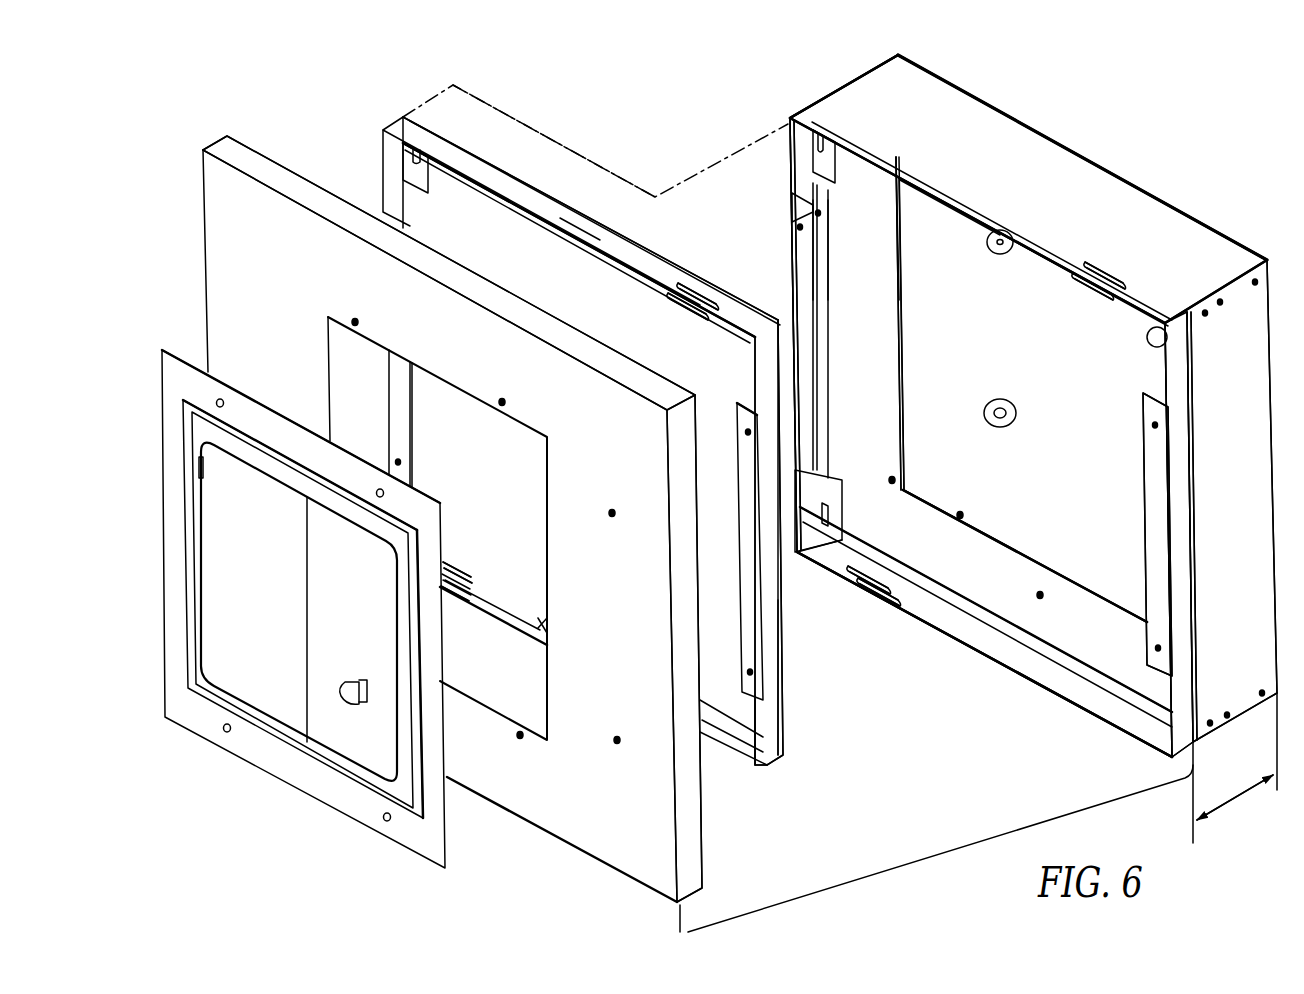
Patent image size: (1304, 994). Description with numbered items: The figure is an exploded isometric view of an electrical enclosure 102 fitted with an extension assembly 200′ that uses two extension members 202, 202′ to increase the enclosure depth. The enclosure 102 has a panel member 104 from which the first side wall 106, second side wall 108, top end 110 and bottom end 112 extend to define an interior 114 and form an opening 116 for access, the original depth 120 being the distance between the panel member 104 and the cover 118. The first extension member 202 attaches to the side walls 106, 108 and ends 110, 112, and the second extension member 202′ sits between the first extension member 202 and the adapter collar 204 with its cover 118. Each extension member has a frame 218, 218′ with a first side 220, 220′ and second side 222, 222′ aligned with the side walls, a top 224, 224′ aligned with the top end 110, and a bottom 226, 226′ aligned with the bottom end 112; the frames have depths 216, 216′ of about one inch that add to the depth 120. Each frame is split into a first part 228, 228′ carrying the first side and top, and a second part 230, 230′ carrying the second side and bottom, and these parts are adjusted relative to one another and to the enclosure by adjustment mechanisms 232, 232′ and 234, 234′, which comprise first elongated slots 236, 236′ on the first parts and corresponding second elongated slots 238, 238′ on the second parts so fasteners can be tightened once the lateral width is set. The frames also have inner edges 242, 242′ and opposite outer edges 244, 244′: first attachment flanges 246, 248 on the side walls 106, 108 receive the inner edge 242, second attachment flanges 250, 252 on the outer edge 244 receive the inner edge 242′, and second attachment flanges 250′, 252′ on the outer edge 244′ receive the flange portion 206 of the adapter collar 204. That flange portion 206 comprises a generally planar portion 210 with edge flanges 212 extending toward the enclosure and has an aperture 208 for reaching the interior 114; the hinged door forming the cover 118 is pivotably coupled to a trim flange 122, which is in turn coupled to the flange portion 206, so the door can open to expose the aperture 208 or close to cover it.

The electrical enclosure 102 is at (750, 160).
The panel member 104 is at (1033, 399).
The first side wall 106 is at (845, 335).
The second side wall 108 is at (1232, 501).
The top end 110 is at (1028, 190).
The bottom end 112 is at (984, 617).
The interior 114 is at (1192, 552).
The opening 116 is at (830, 305).
The cover 118 is at (298, 612).
The depth 120 is at (1235, 797).
The trim flange 122 is at (278, 770).
The extension assembly 200′ is at (936, 848).
The first extension member 202 is at (780, 135).
The second extension member 202′ is at (368, 168).
The adapter collar 204 is at (190, 212).
The flange portion 206 is at (603, 672).
The aperture 208 is at (540, 487).
The generally planar portion 210 is at (440, 526).
The edge flanges 212 is at (220, 140).
The depth 216 is at (1188, 350).
The depth 216′ is at (793, 772).
The frame 218 is at (945, 215).
The frame 218′ is at (575, 248).
The first side 220 is at (812, 170).
The first side 220′ is at (405, 203).
The second side 222 is at (1187, 513).
The second side 222′ is at (790, 620).
The top 224 is at (980, 213).
The top 224′ is at (553, 203).
The bottom 226 is at (1055, 685).
The bottom 226′ is at (735, 738).
The first part 228 is at (880, 130).
The first part 228′ is at (478, 130).
The second part 230 is at (808, 425).
The second part 230′ is at (800, 675).
The adjustment mechanism 232 is at (1048, 322).
The adjustment mechanism 232′ is at (705, 270).
The adjustment mechanism 234 is at (892, 580).
The adjustment mechanism 234′ is at (450, 562).
The first elongated slots 236 is at (1132, 282).
The first elongated slots 236′ is at (703, 284).
The second elongated slots 238 is at (1110, 270).
The second elongated slots 238′ is at (712, 297).
The inner edge 242 is at (918, 162).
The inner edge 242′ is at (487, 161).
The outer edge 244 is at (912, 190).
The outer edge 244′ is at (492, 200).
The first attachment flange 246 is at (860, 232).
The first attachment flange 248 is at (1147, 675).
The second attachment flange 250 is at (815, 360).
The second attachment flange 250′ is at (405, 402).
The second attachment flange 252 is at (1145, 487).
The second attachment flange 252′ is at (740, 510).